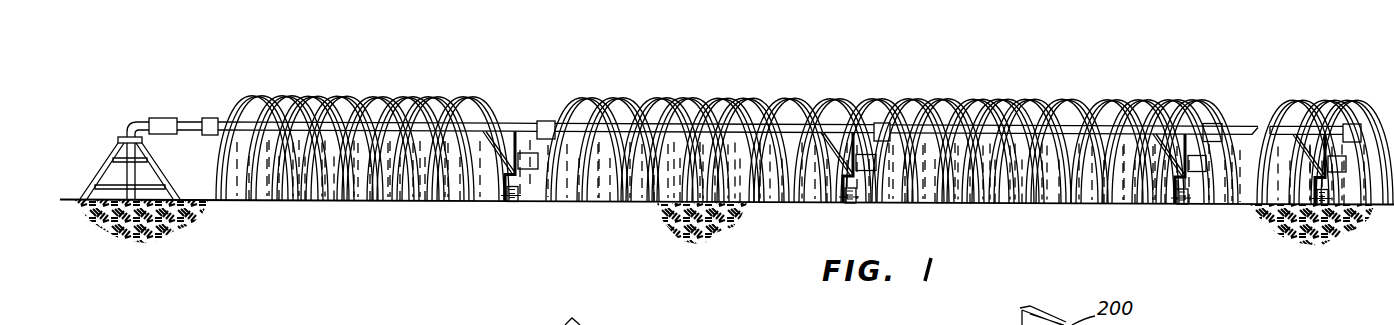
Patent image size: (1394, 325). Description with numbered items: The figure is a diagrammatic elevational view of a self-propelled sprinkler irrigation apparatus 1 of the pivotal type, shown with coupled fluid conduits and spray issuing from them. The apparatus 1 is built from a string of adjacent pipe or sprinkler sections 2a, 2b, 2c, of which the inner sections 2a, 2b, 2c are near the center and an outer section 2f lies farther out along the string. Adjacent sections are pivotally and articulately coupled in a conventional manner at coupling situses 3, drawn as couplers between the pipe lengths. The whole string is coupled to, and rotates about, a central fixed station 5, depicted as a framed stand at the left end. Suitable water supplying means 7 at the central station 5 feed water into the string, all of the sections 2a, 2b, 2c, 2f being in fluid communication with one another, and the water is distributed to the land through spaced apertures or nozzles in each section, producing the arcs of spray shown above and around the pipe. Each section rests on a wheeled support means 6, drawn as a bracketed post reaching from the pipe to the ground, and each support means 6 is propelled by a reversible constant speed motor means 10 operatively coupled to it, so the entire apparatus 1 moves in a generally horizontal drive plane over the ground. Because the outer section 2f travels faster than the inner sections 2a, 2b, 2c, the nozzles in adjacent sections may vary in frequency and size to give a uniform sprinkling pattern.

The self-propelled sprinkler irrigation apparatus 1 is at (306, 45).
The sprinkler section 2a is at (500, 122).
The sprinkler section 2b is at (562, 123).
The sprinkler section 2c is at (1097, 133).
The sprinkler section 2f is at (1337, 133).
The coupling situs 3 is at (544, 121).
The central fixed station 5 is at (158, 172).
The wheeled support means 6 is at (503, 178).
The water supplying means 7 is at (118, 178).
The reversible constant speed motor means 10 is at (530, 160).